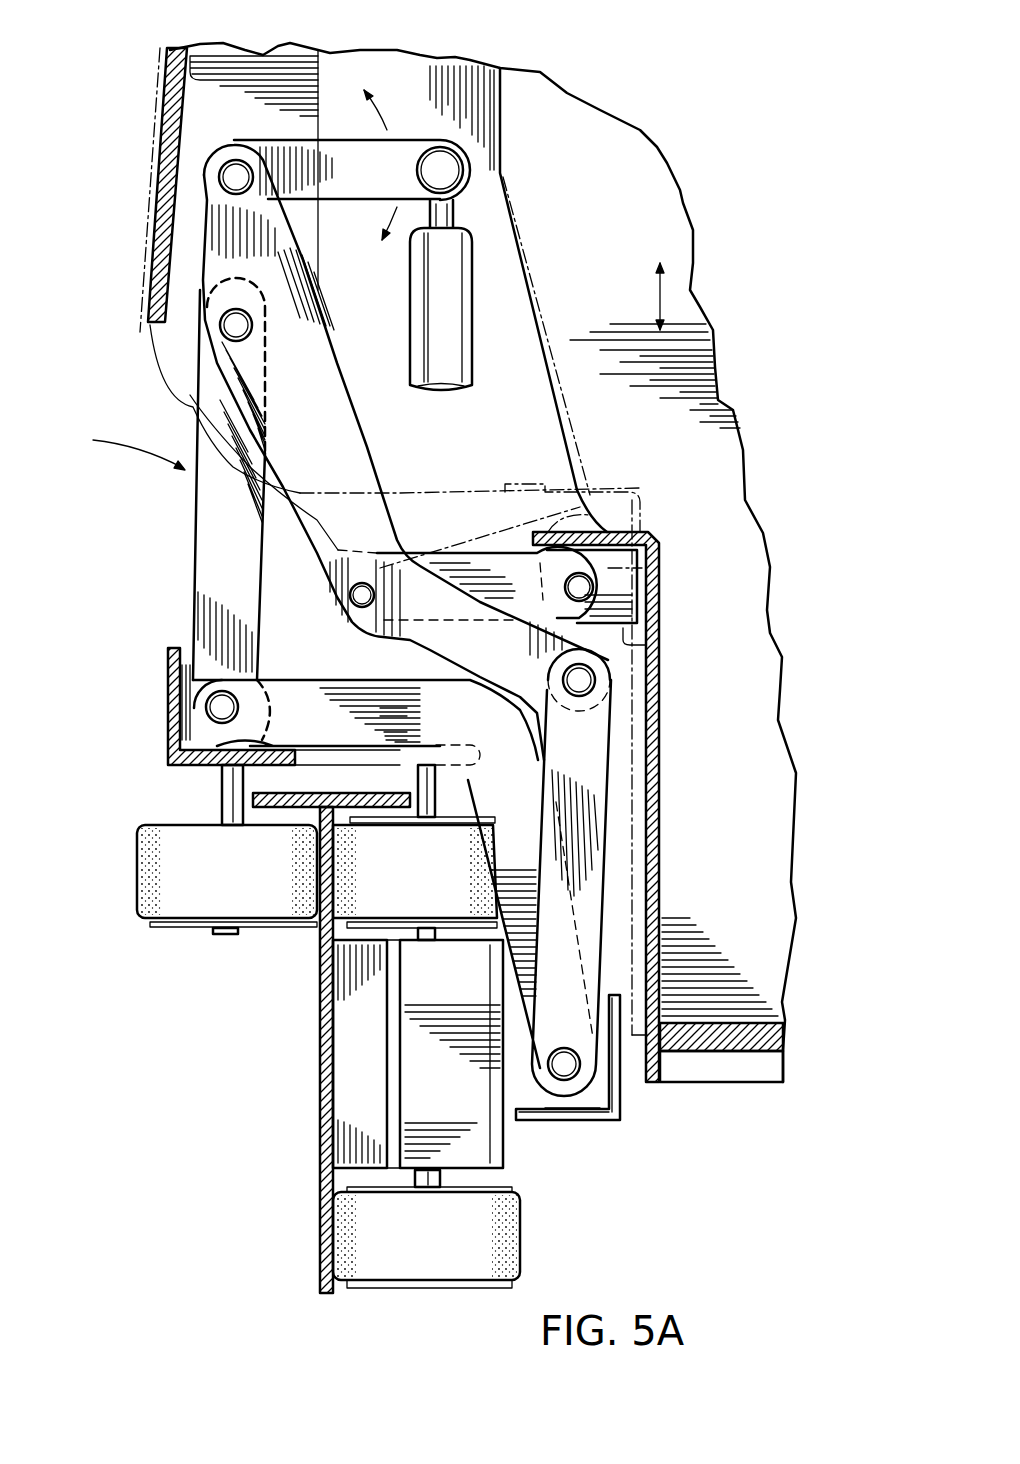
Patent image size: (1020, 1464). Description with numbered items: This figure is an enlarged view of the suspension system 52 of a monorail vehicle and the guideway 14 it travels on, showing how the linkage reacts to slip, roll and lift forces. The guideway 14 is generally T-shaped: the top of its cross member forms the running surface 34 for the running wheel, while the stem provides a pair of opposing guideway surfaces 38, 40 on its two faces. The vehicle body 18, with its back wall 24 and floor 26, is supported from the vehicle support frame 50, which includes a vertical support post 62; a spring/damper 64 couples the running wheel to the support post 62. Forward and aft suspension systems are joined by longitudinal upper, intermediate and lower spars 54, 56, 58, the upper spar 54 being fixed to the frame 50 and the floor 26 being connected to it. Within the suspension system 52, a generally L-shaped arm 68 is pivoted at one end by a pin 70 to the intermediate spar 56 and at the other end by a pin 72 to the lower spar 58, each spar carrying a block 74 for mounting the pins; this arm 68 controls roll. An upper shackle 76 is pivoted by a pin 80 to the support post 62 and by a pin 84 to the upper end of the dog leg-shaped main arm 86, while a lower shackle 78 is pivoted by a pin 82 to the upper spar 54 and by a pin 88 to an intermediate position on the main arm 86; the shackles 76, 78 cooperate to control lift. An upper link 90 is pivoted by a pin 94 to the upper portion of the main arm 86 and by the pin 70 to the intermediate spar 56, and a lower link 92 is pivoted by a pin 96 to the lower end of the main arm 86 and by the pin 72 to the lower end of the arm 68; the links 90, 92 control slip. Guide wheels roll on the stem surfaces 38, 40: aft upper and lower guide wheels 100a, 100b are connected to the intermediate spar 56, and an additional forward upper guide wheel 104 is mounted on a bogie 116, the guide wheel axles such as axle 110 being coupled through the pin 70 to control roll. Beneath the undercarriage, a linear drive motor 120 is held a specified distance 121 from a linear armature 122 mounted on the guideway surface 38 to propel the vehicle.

The guideway 14 is at (313, 1147).
The vehicle body 18 is at (170, 100).
The back wall 24 is at (196, 75).
The floor 26 is at (767, 1022).
The running surface 34 is at (275, 790).
The guideway surface 38 is at (335, 1063).
The guideway surface 40 is at (330, 1080).
The vehicle support frame 50 is at (503, 140).
The suspension system 52 is at (364, 409).
The upper spar 54 is at (660, 564).
The intermediate spar 56 is at (170, 680).
The lower spar 58 is at (603, 1120).
The vertical support post 62 is at (412, 62).
The spring/damper 64 is at (472, 320).
The L-shaped arm 68 is at (345, 692).
The pin 70 is at (214, 710).
The pin 72 is at (589, 1078).
The block 74 is at (645, 634).
The upper shackle 76 is at (338, 178).
The lower shackle 78 is at (498, 526).
The pin 80 is at (472, 170).
The pin 82 is at (582, 586).
The pin 84 is at (236, 172).
The main arm 86 is at (294, 443).
The pin 88 is at (350, 597).
The upper link 90 is at (207, 528).
The lower link 92 is at (596, 862).
The pin 94 is at (245, 340).
The pin 96 is at (598, 682).
The aft upper guide wheel 100a is at (388, 884).
The aft lower guide wheel 100b is at (380, 1251).
The forward upper guide wheel 104 is at (140, 895).
The axle 110 is at (226, 936).
The bogie 116 is at (222, 810).
The linear drive motor 120 is at (433, 1100).
The specified distance 121 is at (393, 992).
The linear armature 122 is at (442, 800).